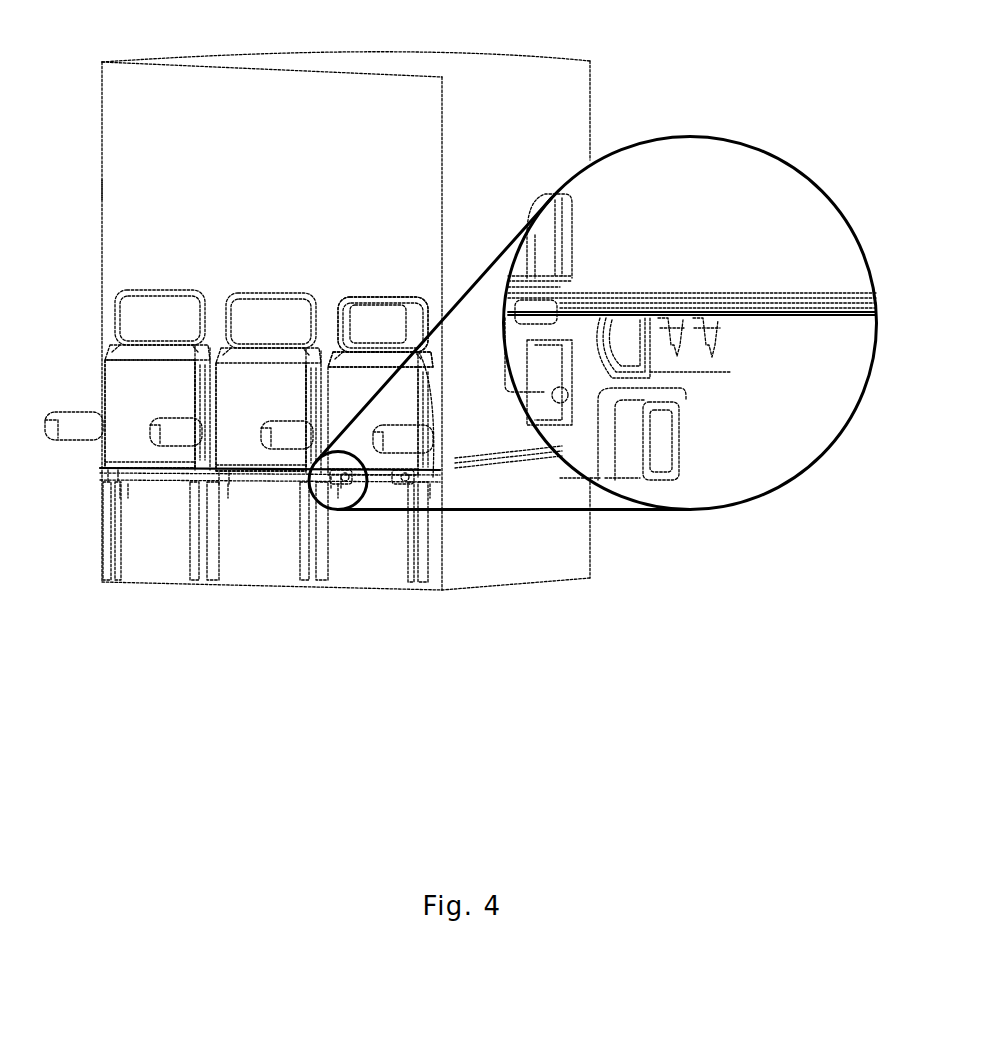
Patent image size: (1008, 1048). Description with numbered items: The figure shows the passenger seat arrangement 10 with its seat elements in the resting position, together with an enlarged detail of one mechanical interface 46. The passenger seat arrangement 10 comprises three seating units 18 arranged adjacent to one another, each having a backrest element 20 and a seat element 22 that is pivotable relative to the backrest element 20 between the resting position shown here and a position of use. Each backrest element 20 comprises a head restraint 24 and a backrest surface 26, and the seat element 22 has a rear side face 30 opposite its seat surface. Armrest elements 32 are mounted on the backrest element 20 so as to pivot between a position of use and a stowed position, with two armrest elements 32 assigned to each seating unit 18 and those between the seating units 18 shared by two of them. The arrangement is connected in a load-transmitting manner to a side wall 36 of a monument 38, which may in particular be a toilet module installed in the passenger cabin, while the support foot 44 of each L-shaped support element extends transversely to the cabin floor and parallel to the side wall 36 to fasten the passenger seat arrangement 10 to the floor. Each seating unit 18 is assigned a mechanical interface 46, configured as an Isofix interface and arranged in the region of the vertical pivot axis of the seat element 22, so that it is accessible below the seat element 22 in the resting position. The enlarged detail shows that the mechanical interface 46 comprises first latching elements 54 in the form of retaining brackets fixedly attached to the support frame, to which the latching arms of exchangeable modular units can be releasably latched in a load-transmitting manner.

The passenger seat arrangement 10 is at (118, 278).
The seating unit 18 is at (200, 273).
The backrest element 20 is at (405, 297).
The seat element 22 is at (318, 398).
The head restraint 24 is at (378, 318).
The backrest surface 26 is at (350, 362).
The rear side face 30 is at (120, 410).
The armrest element 32 is at (82, 432).
The side wall 36 is at (112, 195).
The monument 38 is at (138, 58).
The support foot 44 is at (430, 556).
The mechanical interface 46 is at (403, 497).
The first latching element 54 is at (681, 323).